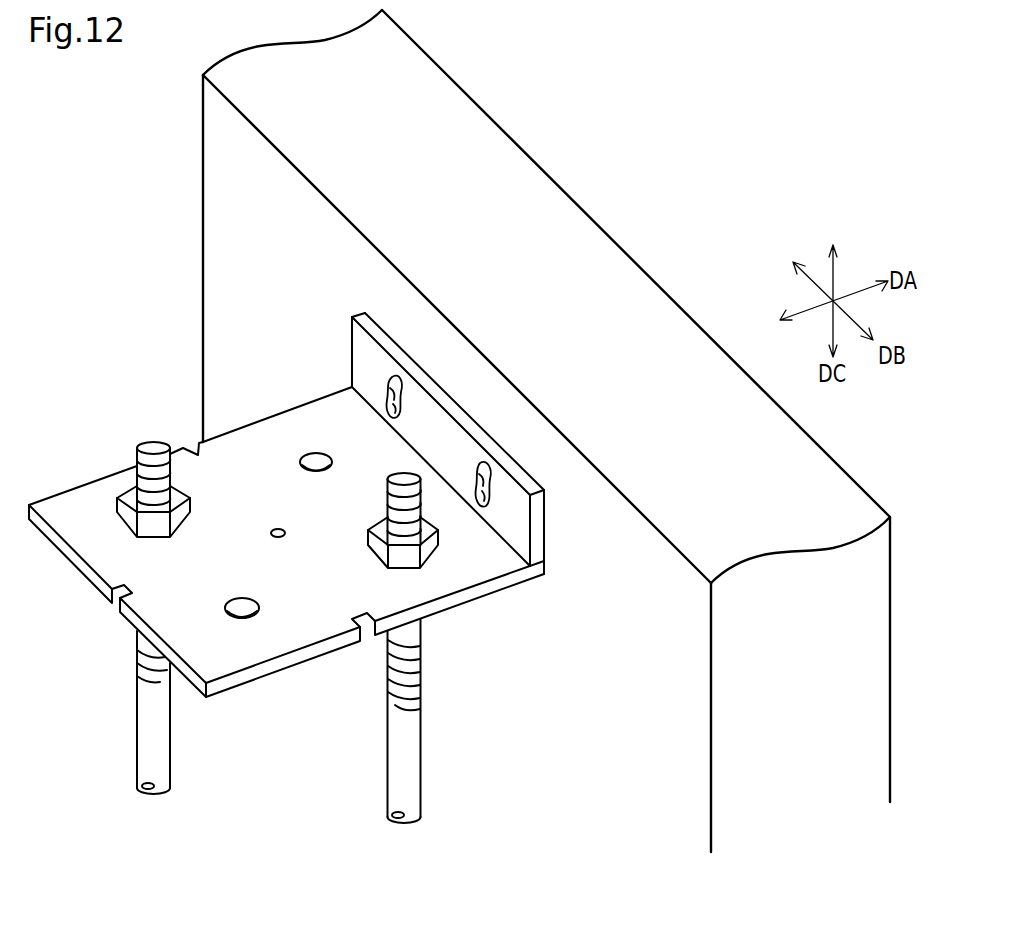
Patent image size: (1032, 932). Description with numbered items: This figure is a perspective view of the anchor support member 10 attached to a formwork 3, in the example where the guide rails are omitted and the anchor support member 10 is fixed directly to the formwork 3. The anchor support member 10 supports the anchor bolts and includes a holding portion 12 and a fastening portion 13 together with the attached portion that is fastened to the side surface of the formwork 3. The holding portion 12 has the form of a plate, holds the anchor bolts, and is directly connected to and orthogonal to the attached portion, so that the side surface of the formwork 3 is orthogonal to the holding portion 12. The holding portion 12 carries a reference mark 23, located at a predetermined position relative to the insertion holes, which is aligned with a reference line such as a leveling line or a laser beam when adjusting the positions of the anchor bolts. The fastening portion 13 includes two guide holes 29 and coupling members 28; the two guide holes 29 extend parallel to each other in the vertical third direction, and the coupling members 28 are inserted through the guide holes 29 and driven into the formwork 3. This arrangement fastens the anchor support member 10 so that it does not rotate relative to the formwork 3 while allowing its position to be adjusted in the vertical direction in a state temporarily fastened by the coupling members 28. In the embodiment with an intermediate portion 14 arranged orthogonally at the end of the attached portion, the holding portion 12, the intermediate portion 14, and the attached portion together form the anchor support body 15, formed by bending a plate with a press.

The formwork 3 is at (525, 431).
The anchor support member 10 is at (510, 317).
The holding portion 12 is at (80, 500).
The fastening portion 13 is at (449, 485).
The intermediate portion 14 is at (352, 360).
The anchor support body 15 is at (543, 466).
The reference mark 23 is at (274, 528).
The coupling members 28 is at (453, 403).
The guide holes 29 is at (393, 378).